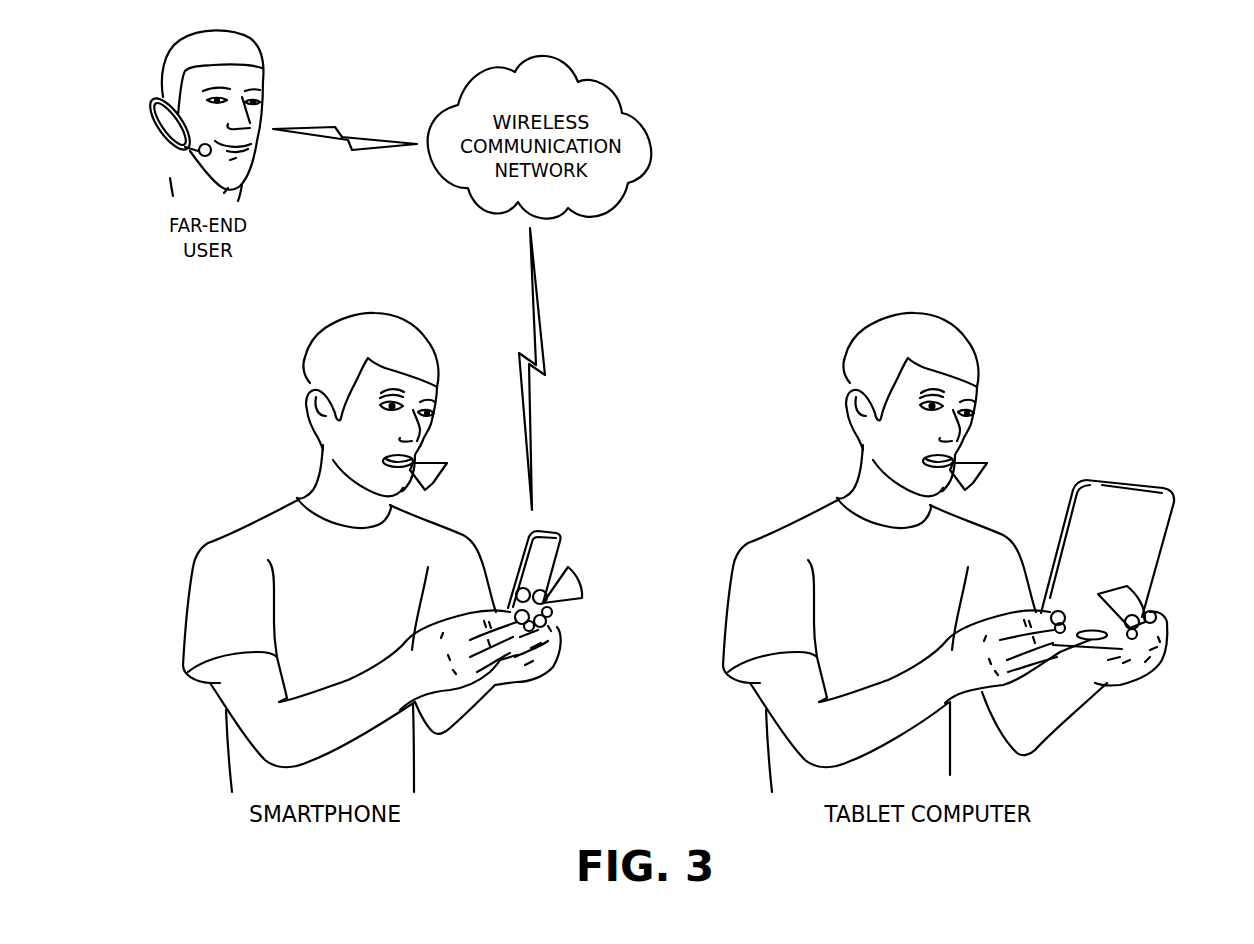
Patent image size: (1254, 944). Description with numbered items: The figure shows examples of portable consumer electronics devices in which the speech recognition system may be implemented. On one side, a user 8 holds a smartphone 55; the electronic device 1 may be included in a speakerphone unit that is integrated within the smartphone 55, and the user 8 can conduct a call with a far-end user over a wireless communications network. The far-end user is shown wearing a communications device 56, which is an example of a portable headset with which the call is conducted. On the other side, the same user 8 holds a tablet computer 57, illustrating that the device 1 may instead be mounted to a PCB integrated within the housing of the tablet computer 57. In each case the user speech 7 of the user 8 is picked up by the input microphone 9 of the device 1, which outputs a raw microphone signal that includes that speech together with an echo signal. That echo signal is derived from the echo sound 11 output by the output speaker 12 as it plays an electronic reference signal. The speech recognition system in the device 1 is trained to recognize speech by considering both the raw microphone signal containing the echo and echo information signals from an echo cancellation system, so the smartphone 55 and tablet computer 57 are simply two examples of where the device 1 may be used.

The electronic device 1 is at (577, 603).
The user speech 7 is at (437, 460).
The user 8 is at (400, 328).
The input microphone 9 is at (518, 591).
The echo sound 11 is at (573, 578).
The output speaker 12 is at (549, 616).
The smartphone 55 is at (543, 527).
The communications device 56 is at (163, 129).
The tablet computer 57 is at (1043, 588).